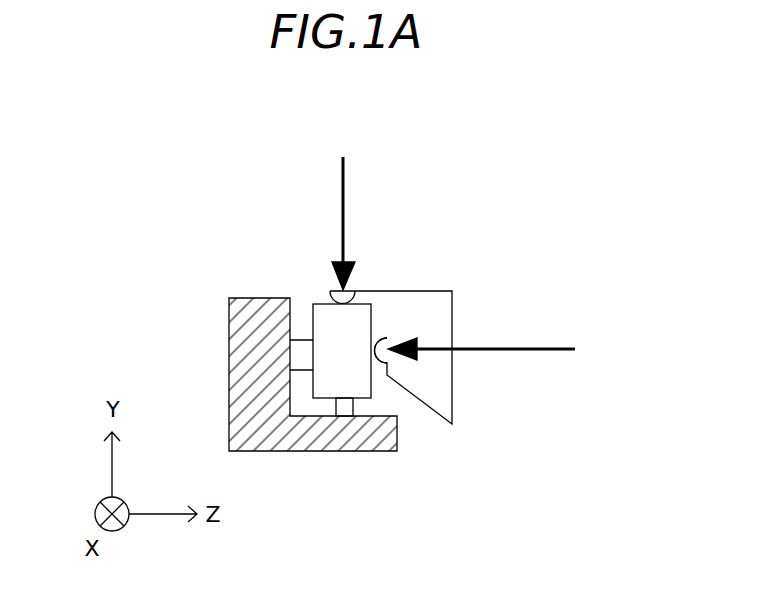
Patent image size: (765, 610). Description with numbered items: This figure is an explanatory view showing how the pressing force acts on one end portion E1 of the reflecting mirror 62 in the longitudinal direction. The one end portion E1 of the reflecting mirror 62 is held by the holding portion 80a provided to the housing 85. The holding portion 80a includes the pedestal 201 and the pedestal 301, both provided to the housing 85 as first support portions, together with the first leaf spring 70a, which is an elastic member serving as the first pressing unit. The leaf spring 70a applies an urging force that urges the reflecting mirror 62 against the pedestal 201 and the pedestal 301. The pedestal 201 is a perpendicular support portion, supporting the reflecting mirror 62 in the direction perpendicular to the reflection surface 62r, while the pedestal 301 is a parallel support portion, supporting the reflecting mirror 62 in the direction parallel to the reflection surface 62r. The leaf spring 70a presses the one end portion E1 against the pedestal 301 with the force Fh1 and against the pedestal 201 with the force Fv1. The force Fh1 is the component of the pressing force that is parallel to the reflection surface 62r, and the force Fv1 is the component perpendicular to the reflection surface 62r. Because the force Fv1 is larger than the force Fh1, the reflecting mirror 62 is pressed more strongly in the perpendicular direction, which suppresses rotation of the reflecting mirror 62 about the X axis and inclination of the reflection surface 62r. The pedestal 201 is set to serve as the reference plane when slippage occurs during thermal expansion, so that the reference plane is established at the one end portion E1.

The holding portion 80a is at (310, 320).
The reflecting mirror 62 is at (337, 328).
The reflection surface 62r is at (380, 388).
The pedestal 201 is at (303, 352).
The pedestal 301 is at (343, 404).
The first leaf spring 70a is at (452, 313).
The housing 85 is at (267, 448).
The one end portion E1 is at (320, 399).
The force Fh1 is at (341, 202).
The force Fv1 is at (504, 350).